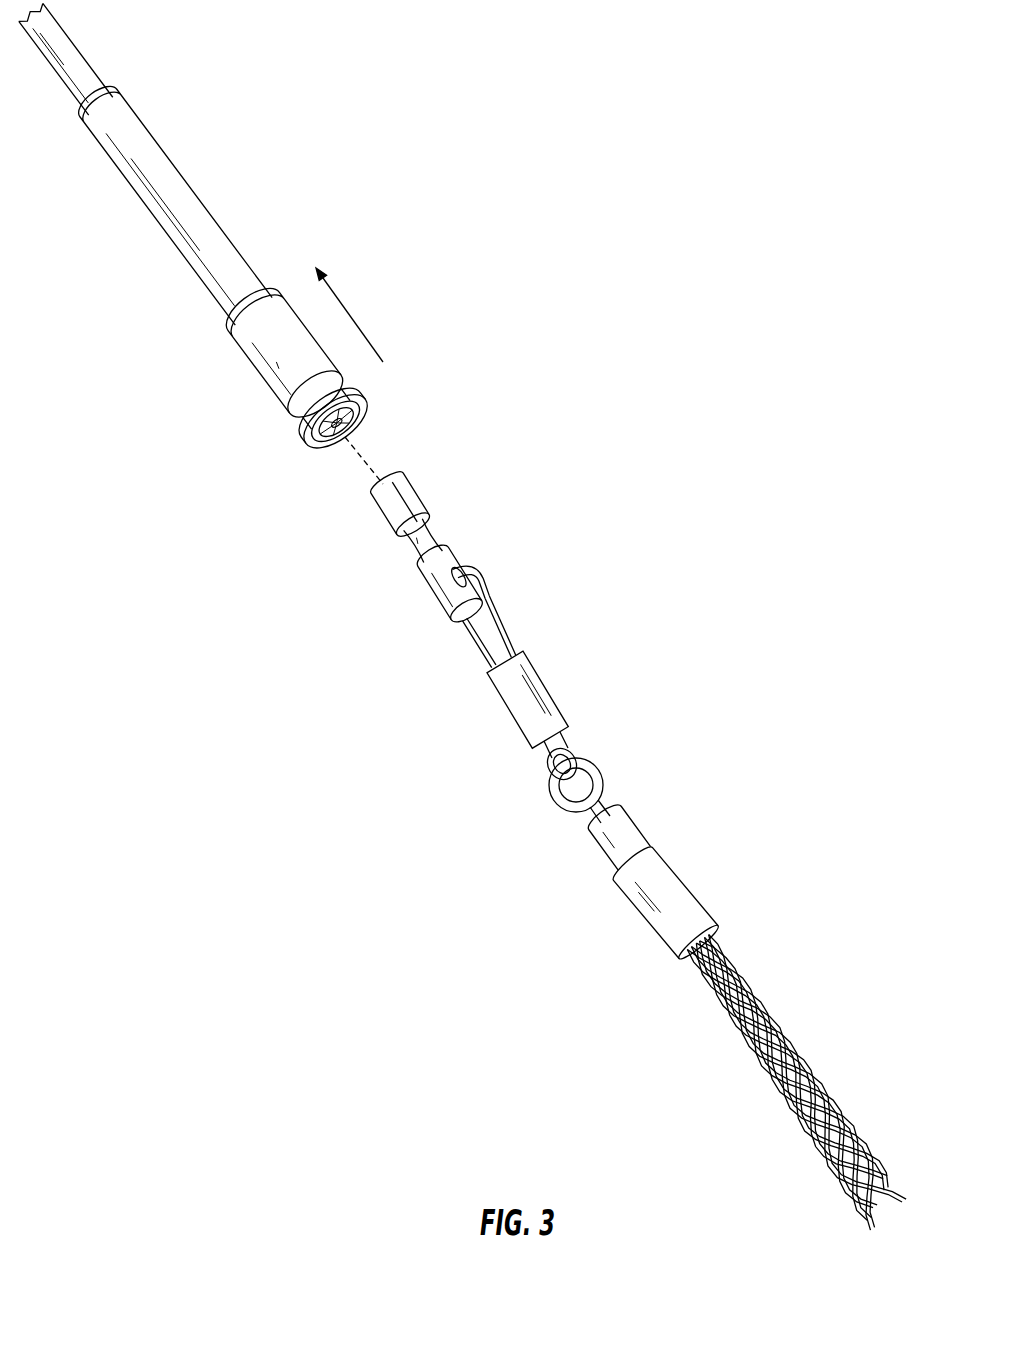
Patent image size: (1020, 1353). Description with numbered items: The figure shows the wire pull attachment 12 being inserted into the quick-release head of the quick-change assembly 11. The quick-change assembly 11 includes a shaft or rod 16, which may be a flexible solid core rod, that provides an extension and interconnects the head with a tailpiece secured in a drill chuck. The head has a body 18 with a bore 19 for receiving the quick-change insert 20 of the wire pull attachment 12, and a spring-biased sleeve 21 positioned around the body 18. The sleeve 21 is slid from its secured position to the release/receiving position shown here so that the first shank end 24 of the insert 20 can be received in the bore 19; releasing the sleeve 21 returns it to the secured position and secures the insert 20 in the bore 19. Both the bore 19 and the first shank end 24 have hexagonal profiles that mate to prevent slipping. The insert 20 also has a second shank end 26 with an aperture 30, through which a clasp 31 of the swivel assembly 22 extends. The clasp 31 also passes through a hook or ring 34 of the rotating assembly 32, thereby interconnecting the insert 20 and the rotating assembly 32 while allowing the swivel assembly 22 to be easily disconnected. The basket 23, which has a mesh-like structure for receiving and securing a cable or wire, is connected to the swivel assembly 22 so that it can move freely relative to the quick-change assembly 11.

The quick-change assembly 11 is at (378, 170).
The wire pull attachment 12 is at (748, 752).
The shaft or rod 16 is at (78, 56).
The body 18 is at (153, 197).
The bore 19 is at (335, 445).
The quick-change insert 20 is at (398, 556).
The spring-biased sleeve 21 is at (253, 333).
The swivel assembly 22 is at (510, 723).
The basket 23 is at (860, 1124).
The first shank end 24 is at (416, 489).
The second shank end 26 is at (441, 591).
The aperture 30 is at (474, 577).
The clasp 31 is at (498, 612).
The rotating assembly 32 is at (628, 833).
The hook or ring 34 is at (594, 770).